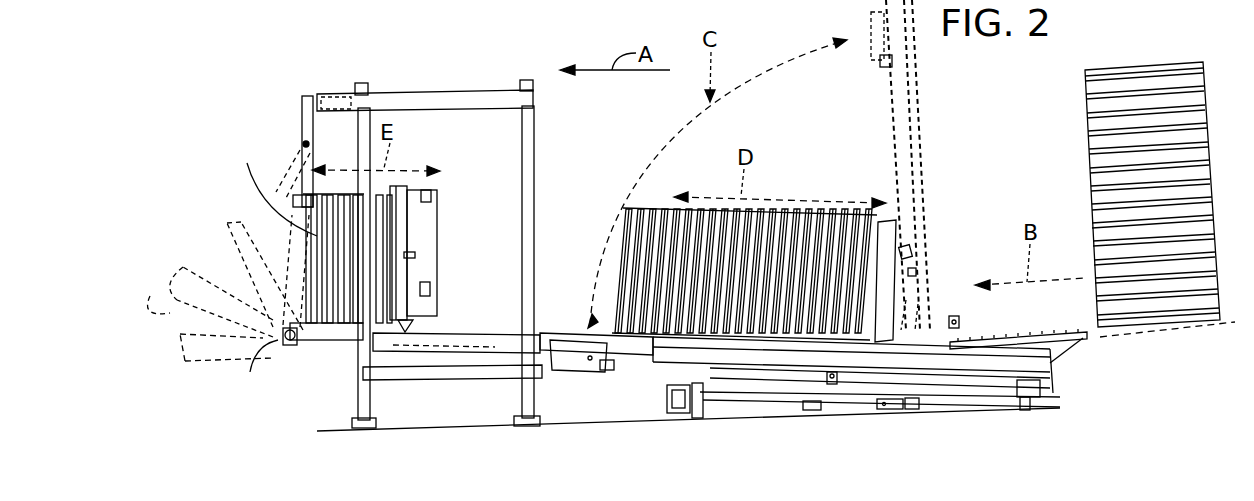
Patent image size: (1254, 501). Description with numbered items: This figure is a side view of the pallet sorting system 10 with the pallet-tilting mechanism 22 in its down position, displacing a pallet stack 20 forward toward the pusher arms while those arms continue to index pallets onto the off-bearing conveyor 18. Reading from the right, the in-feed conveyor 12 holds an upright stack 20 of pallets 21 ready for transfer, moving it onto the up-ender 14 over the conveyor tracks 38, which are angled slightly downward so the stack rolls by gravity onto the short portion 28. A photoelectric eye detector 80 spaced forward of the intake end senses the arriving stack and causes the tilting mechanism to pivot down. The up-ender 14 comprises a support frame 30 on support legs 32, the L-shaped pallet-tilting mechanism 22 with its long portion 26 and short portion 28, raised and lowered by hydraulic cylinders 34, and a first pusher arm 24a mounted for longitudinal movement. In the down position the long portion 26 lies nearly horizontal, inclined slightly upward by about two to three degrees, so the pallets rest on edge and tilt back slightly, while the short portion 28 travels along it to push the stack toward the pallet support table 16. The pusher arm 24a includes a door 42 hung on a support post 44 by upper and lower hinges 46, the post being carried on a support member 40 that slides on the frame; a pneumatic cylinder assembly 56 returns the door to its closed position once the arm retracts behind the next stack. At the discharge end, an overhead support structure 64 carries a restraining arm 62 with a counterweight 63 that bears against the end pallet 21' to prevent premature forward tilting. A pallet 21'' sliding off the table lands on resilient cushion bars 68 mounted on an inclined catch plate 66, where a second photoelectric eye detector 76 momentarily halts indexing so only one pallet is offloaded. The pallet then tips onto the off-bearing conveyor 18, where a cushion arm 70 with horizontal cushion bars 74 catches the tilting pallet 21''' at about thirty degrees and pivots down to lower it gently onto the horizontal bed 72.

The pallet sorting system 10 is at (1058, 70).
The in-feed conveyor 12 is at (1180, 343).
The up-ender 14 is at (849, 408).
The pallet support table 16 is at (329, 345).
The off-bearing conveyor 18 is at (200, 365).
The stack of pallets 20 is at (385, 190).
The pallet 21 is at (1025, 176).
The end pallet 21' is at (274, 187).
The discharging pallet 21'' is at (253, 253).
The tilting pallet 21''' is at (240, 273).
The pallet-tilting mechanism 22 is at (932, 140).
The first pusher arm 24a is at (445, 267).
The long portion 26 is at (564, 332).
The short portion 28 is at (898, 244).
The support frame 30 is at (765, 396).
The support legs 32 is at (666, 401).
The hydraulic cylinders 34 is at (932, 300).
The conveyor tracks 38 is at (1088, 336).
The support members 40 is at (501, 352).
The door 42 is at (422, 218).
The support post 44 is at (432, 207).
The hinges 46 is at (431, 194).
The pneumatic cylinder assembly 56 is at (418, 255).
The restraining arm 62 is at (310, 163).
The counterweight 63 is at (300, 193).
The overhead support structure 64 is at (410, 95).
The catch plate 66 is at (286, 347).
The cushion bars 68 is at (297, 345).
The cushion arm 70 is at (203, 302).
The bed 72 is at (215, 365).
The cushion bars 74 is at (190, 290).
The second photoelectric eye detector 76 is at (256, 368).
The photoelectric eye detector 80 is at (960, 322).